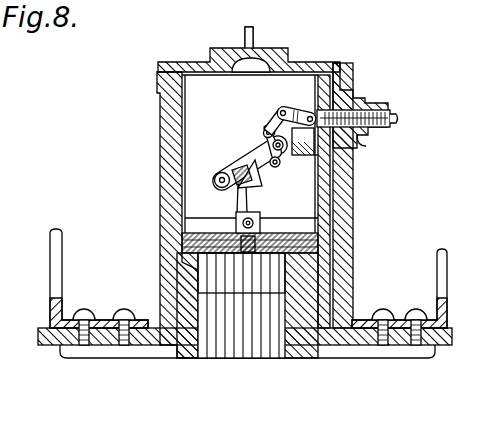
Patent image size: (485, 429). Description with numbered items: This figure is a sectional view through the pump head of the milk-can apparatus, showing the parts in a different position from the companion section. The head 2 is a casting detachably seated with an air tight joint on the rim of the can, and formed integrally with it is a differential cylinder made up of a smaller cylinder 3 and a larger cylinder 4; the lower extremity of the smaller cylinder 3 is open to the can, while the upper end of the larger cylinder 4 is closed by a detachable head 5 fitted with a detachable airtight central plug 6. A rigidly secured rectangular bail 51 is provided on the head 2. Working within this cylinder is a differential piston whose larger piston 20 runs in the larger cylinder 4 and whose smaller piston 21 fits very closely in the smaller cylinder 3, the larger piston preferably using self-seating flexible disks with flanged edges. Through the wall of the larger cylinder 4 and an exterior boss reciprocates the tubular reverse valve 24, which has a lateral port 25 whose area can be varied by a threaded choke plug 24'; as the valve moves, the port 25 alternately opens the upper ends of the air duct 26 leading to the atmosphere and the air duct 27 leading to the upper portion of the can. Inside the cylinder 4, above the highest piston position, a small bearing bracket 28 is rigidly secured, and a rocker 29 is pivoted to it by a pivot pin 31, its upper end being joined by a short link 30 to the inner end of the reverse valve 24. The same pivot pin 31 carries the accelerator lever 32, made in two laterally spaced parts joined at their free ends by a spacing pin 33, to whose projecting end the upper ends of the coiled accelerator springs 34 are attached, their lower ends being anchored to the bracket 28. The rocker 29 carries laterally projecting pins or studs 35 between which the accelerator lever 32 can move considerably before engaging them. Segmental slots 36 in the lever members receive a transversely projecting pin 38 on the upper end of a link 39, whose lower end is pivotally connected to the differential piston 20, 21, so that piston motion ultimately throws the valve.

The head 2 is at (148, 343).
The smaller cylinder 3 is at (190, 349).
The larger cylinder 4 is at (162, 136).
The detachable head 5 is at (309, 65).
The central plug 6 is at (251, 53).
The larger piston 20 is at (241, 305).
The smaller piston 21 is at (262, 257).
The reverse valve 24 is at (368, 96).
The threaded choke plug 24' is at (419, 112).
The lateral port 25 is at (326, 108).
The air duct 26 is at (360, 143).
The air duct 27 is at (343, 227).
The bearing bracket 28 is at (315, 165).
The rocker 29 is at (268, 128).
The short link 30 is at (297, 102).
The pivot pin 31 is at (262, 143).
The accelerator lever 32 is at (230, 165).
The spacing pin 33 is at (214, 181).
The coiled accelerator springs 34 is at (212, 205).
The pins or studs 35 is at (264, 131).
The segmental slots 36 is at (247, 187).
The transversely projecting pin 38 is at (240, 185).
The link 39 is at (236, 216).
The rectangular bail 51 is at (58, 268).